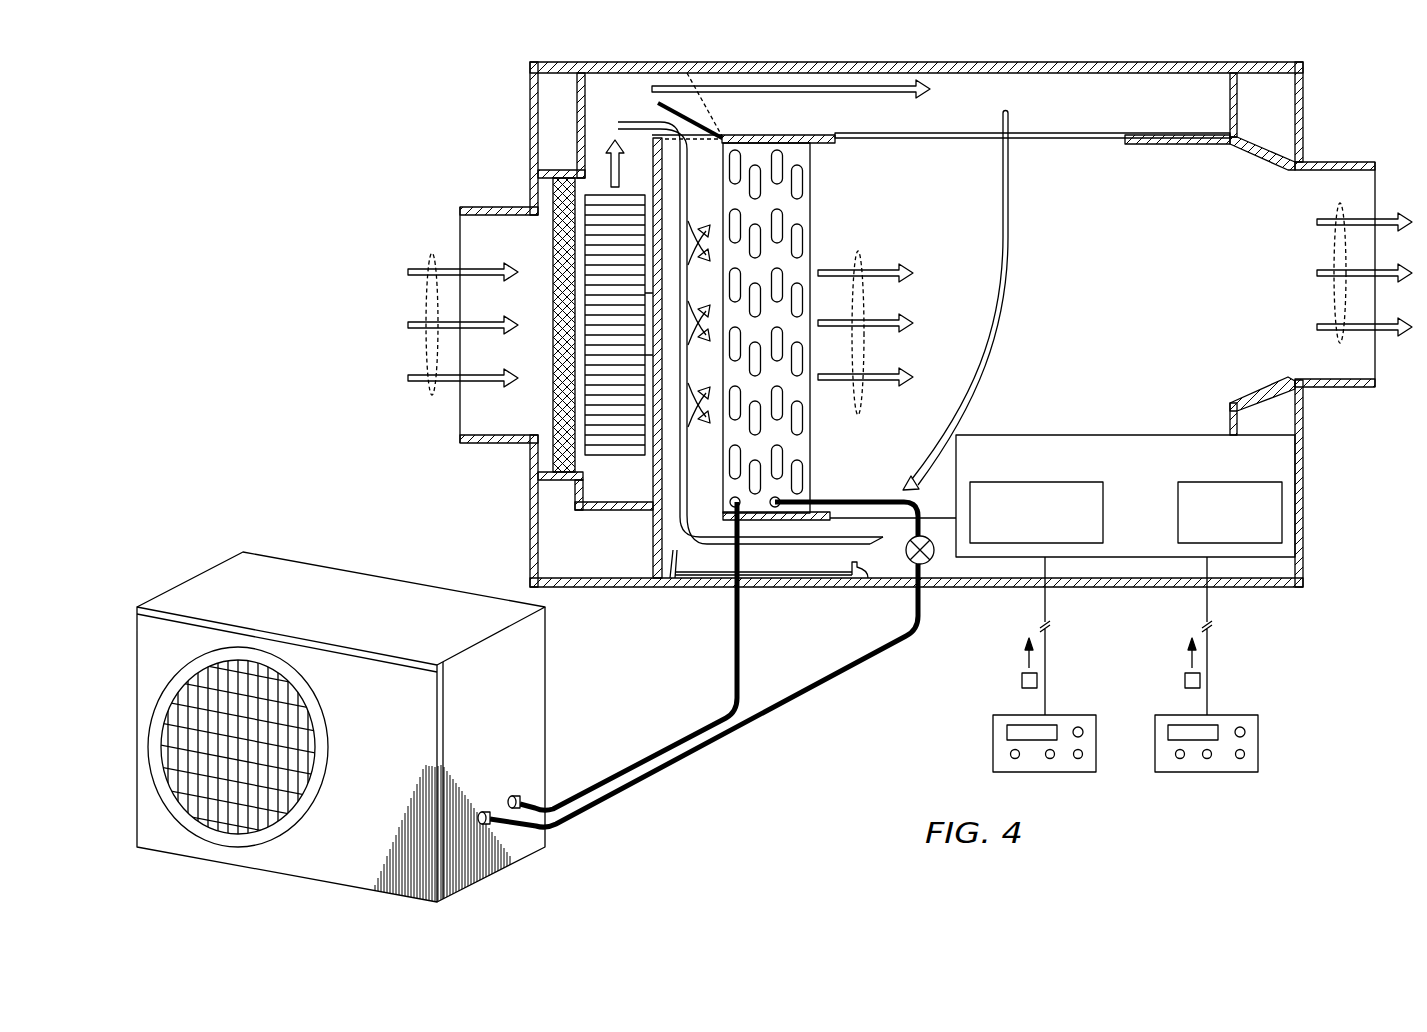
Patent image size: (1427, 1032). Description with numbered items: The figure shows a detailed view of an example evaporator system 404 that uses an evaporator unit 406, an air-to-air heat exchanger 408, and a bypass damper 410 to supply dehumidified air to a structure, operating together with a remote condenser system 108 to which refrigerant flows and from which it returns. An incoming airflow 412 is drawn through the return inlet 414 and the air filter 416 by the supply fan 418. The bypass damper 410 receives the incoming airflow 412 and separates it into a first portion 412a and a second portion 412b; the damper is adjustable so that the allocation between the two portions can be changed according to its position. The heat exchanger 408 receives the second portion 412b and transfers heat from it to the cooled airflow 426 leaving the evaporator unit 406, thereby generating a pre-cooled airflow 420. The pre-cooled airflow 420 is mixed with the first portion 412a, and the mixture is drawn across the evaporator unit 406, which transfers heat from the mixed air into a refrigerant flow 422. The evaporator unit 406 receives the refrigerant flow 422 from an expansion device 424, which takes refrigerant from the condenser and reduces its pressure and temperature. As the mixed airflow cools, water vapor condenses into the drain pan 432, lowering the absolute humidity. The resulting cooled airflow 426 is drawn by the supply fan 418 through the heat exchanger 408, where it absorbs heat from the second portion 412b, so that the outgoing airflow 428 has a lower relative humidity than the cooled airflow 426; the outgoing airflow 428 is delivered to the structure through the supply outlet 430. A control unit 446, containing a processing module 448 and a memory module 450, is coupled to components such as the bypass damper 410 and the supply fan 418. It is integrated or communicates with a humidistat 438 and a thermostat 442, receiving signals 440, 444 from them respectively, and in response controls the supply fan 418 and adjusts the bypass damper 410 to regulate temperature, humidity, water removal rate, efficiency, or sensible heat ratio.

The remote condenser system 108 is at (266, 549).
The evaporator system 404 is at (522, 126).
The evaporator unit 406 is at (805, 217).
The heat exchanger 408 is at (1123, 212).
The bypass damper 410 is at (700, 105).
The incoming airflow 412 is at (431, 394).
The first portion 412a is at (687, 196).
The second portion 412b is at (888, 94).
The return inlet 414 is at (468, 207).
The air filter 416 is at (553, 256).
The supply fan 418 is at (612, 456).
The pre-cooled airflow 420 is at (847, 540).
The refrigerant flow 422 is at (737, 606).
The expansion device 424 is at (933, 556).
The cooled airflow 426 is at (858, 414).
The outgoing airflow 428 is at (1340, 340).
The supply outlet 430 is at (1340, 160).
The drain pan 432 is at (855, 590).
The humidistat 438 is at (993, 747).
The signal 440 is at (1022, 681).
The thermostat 442 is at (1258, 748).
The signal 444 is at (1185, 681).
The control unit 446 is at (1259, 471).
The processing module 448 is at (1103, 519).
The memory module 450 is at (1178, 510).